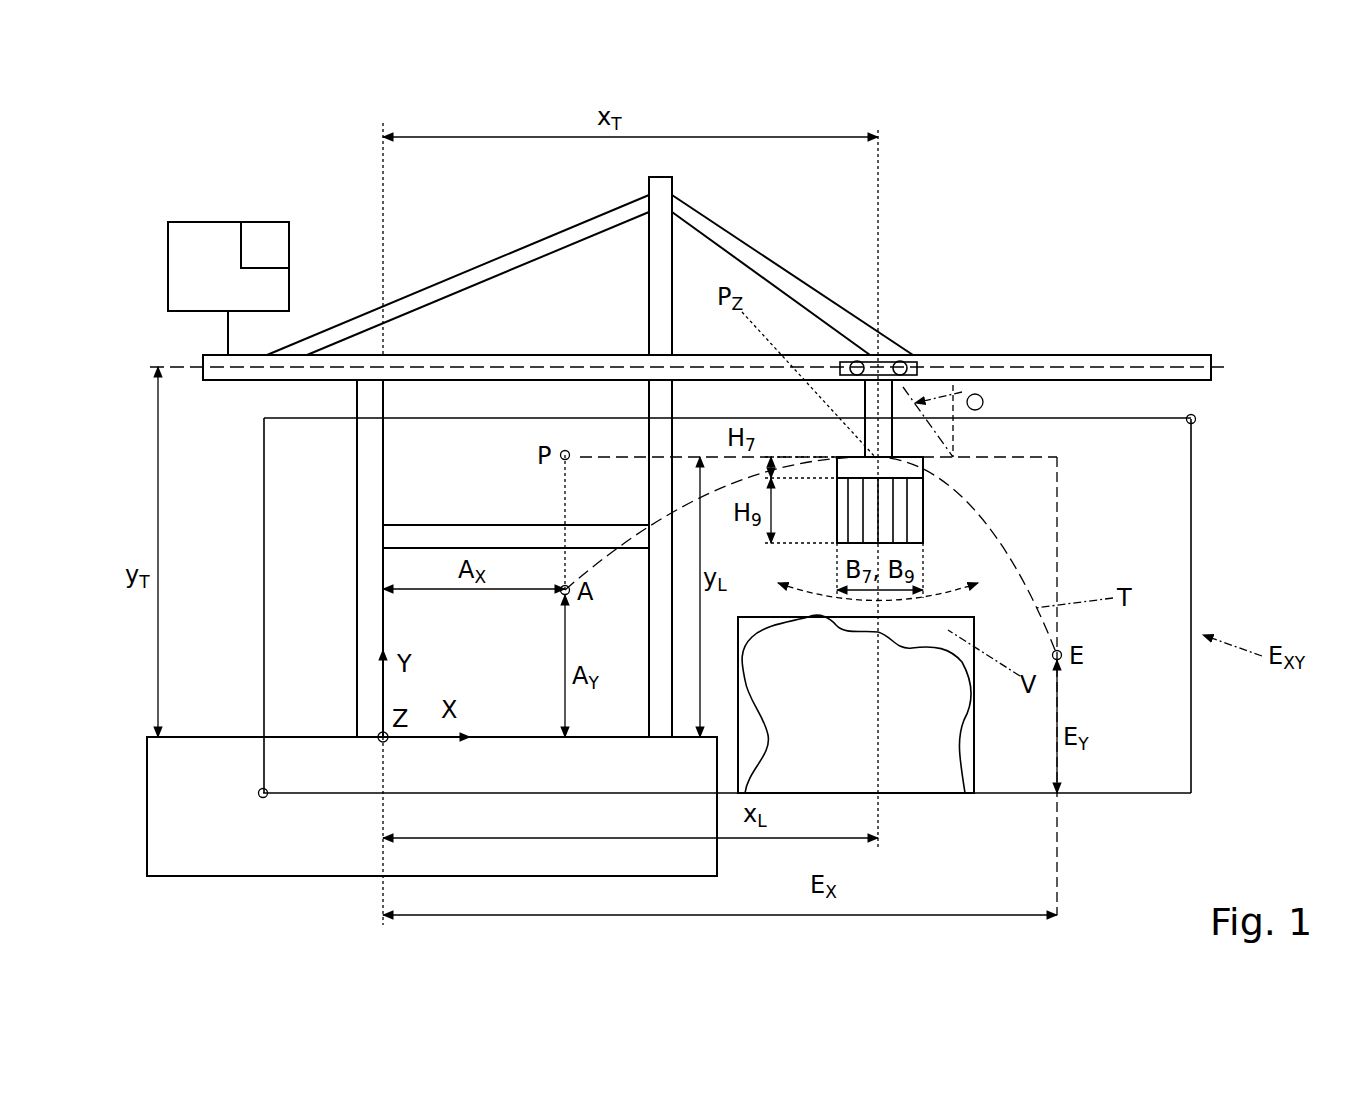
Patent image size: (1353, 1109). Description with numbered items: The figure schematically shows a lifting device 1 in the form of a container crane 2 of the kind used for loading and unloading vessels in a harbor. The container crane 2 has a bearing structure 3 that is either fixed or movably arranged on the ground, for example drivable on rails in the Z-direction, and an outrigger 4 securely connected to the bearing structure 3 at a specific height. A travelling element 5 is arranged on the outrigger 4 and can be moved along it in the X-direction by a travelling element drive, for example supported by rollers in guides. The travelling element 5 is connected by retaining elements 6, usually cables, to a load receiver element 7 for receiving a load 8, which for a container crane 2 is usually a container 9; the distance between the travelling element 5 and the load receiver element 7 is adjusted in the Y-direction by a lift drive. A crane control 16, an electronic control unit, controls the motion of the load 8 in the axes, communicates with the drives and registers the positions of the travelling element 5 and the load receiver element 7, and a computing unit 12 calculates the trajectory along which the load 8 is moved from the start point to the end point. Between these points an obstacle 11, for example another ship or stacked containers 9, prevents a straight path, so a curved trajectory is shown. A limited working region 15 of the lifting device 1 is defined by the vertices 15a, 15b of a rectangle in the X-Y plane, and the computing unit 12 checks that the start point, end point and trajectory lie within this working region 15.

The lifting device 1 is at (176, 186).
The container crane 2 is at (150, 159).
The bearing structure 3 is at (373, 462).
The outrigger 4 is at (1147, 362).
The travelling element 5 is at (855, 352).
The retaining elements 6 is at (880, 392).
The load receiver element 7 is at (890, 468).
The load 8 is at (905, 505).
The container 9 is at (1060, 543).
The obstacle 11 is at (836, 726).
The computing unit 12 is at (258, 245).
The working region 15 is at (1195, 711).
The vertex 15a is at (245, 812).
The vertex 15b is at (1217, 420).
The crane control 16 is at (218, 258).